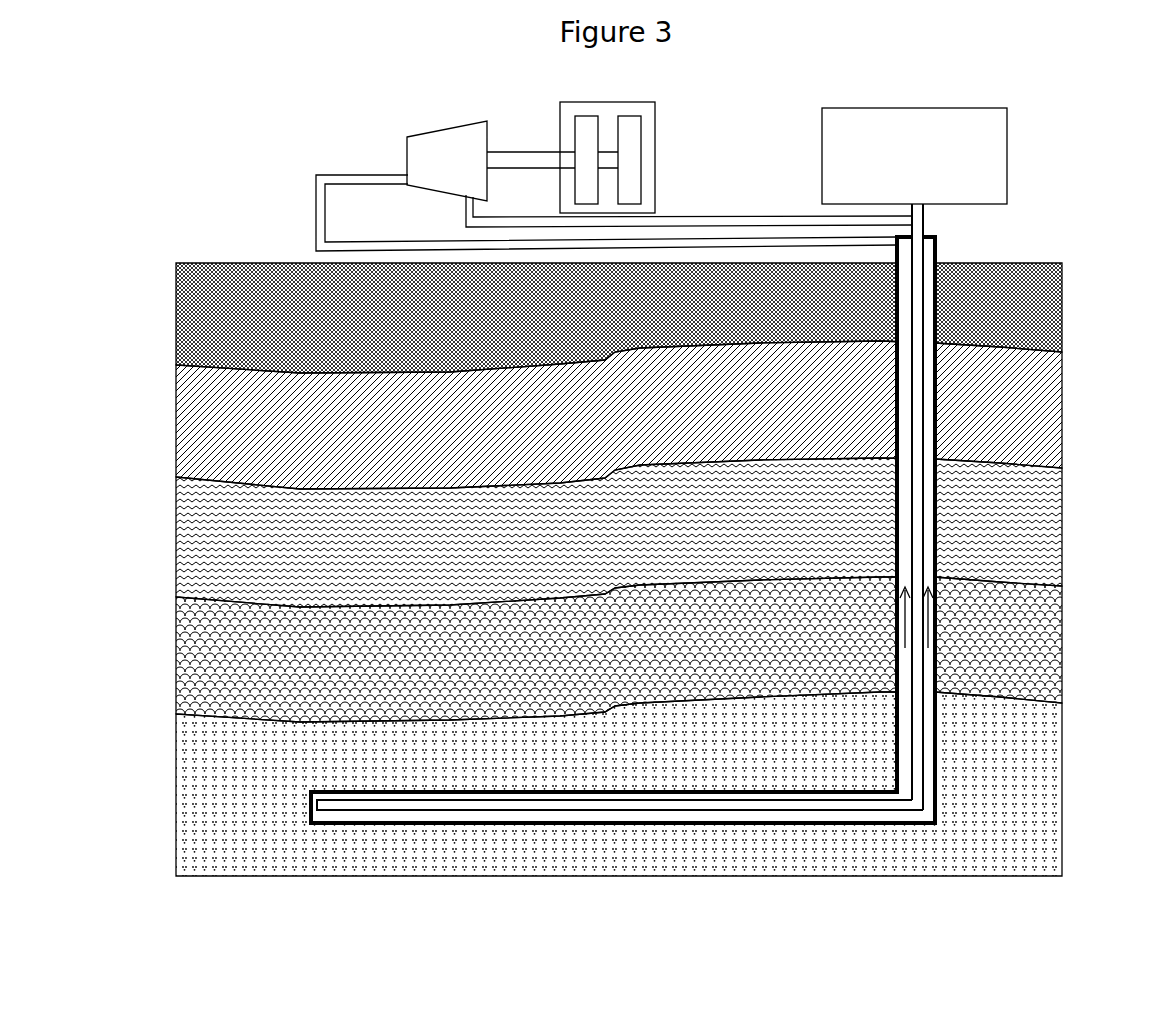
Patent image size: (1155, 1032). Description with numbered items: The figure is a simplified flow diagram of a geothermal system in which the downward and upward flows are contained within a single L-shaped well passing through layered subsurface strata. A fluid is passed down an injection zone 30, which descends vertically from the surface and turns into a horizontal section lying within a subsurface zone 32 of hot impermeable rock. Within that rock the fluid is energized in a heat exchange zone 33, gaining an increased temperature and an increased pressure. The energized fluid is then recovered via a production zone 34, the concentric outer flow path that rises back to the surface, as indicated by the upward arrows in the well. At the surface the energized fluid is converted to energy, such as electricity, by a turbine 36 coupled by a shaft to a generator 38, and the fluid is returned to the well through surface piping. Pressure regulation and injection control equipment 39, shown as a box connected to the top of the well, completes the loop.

The injection zone 30 is at (923, 437).
The subsurface zone 32 is at (269, 772).
The heat exchange zone 33 is at (403, 827).
The production zone 34 is at (938, 543).
The turbine 36 is at (447, 161).
The generator 38 is at (655, 129).
The pressure regulation and injection control equipment 39 is at (914, 156).